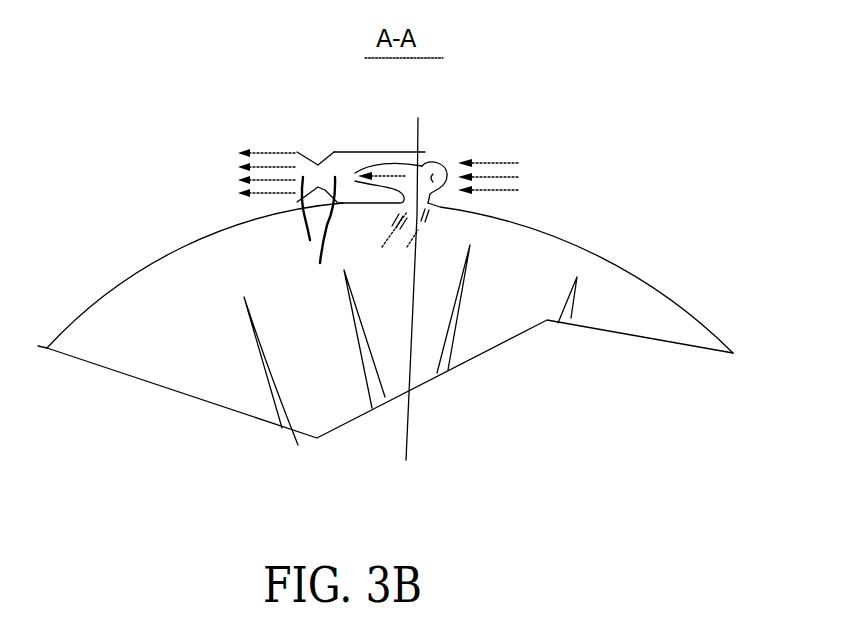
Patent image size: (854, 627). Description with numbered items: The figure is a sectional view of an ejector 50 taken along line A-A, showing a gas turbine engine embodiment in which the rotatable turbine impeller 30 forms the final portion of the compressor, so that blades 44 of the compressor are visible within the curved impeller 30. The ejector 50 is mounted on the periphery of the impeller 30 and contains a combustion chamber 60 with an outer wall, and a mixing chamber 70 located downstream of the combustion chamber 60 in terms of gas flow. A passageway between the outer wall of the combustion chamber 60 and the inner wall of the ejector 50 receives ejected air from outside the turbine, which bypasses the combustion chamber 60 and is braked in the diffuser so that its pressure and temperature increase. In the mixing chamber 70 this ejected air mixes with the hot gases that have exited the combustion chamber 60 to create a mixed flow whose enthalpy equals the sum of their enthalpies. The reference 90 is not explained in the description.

The turbine impeller 30 is at (152, 297).
The blades 44 is at (463, 312).
The ejector 50 is at (355, 148).
The combustion chamber 60 is at (447, 175).
The mixing chamber 70 is at (348, 170).
The flow guide 90 is at (311, 225).